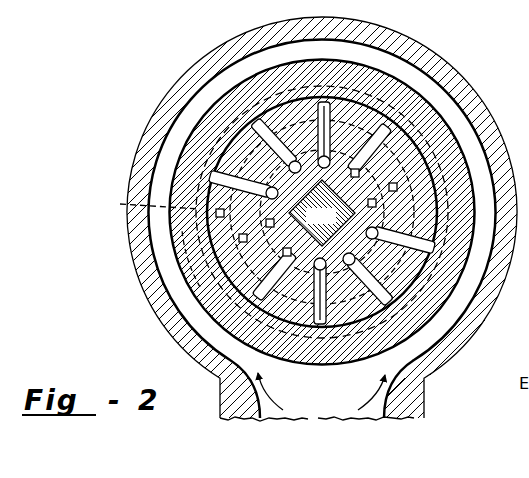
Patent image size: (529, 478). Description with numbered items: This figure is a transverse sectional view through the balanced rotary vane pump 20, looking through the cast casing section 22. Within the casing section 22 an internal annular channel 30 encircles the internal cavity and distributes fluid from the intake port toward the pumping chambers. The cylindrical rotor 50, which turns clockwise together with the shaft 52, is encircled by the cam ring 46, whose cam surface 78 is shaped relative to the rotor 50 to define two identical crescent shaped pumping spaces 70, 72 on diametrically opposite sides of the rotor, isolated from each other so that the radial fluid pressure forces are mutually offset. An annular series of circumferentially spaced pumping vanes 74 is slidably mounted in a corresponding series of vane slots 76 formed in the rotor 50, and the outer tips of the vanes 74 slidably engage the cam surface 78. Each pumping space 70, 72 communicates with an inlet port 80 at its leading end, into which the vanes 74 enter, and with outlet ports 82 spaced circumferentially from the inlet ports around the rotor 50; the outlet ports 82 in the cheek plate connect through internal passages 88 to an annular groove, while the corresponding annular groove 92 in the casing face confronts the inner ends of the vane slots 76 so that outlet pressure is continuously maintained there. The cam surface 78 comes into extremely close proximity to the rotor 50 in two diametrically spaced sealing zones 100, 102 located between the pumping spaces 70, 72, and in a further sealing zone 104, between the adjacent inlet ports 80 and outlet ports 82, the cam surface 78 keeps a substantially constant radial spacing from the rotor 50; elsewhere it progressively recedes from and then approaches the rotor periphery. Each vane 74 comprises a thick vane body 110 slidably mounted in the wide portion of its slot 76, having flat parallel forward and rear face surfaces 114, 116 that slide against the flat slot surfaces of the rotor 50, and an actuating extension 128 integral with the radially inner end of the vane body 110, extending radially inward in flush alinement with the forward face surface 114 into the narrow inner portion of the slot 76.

The pump 20 is at (192, 52).
The casing section 22 is at (178, 102).
The annular channel 30 is at (178, 132).
The cam ring 46 is at (200, 287).
The rotor 50 is at (398, 140).
The shaft 52 is at (311, 224).
The pumping space 70 is at (240, 133).
The pumping space 72 is at (402, 300).
The pumping vane 74 is at (266, 118).
The vane slot 76 is at (236, 173).
The cam surface 78 is at (224, 214).
The inlet port 80 is at (149, 201).
The outlet port 82 is at (325, 88).
The internal passage 88 is at (331, 128).
The annular groove 92 is at (283, 257).
The sealing zone 100 is at (446, 116).
The sealing zone 102 is at (195, 300).
The sealing zone 104 is at (222, 132).
The vane body 110 is at (325, 312).
The forward face surface 114 is at (343, 117).
The rear face surface 116 is at (317, 117).
The actuating extension 128 is at (356, 261).